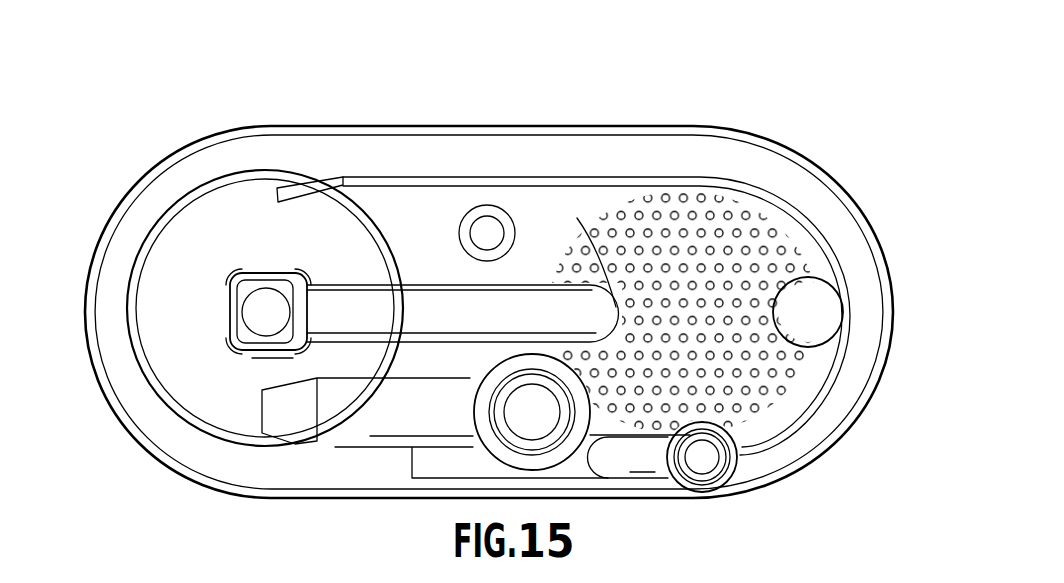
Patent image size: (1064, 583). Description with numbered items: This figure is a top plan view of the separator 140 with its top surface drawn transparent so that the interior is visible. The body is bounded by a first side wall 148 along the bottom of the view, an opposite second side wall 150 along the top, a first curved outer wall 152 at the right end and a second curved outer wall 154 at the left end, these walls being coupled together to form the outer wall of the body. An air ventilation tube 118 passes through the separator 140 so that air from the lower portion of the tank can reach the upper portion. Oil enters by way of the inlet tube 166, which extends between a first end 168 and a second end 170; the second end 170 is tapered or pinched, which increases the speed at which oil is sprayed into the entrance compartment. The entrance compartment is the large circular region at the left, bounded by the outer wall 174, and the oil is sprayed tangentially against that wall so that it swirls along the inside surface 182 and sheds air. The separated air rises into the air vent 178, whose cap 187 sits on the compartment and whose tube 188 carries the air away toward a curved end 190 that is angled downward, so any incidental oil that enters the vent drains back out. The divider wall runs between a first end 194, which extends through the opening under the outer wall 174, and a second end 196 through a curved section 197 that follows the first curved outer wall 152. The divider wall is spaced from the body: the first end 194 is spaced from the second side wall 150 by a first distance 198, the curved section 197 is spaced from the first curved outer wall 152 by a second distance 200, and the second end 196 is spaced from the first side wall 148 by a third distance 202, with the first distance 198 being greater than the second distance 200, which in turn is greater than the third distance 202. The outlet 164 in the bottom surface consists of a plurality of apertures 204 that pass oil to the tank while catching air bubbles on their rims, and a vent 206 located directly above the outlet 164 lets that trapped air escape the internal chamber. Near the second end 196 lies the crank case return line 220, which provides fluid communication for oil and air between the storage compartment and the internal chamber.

The separator 140 is at (884, 102).
The first side wall 148 is at (319, 501).
The second side wall 150 is at (680, 126).
The first curved outer wall 152 is at (893, 301).
The second curved outer wall 154 is at (84, 278).
The outlet 164 is at (702, 268).
The tube 166 is at (390, 420).
The first end 168 is at (552, 458).
The second end 170 is at (278, 415).
The outer wall 174 is at (145, 235).
The air vent 178 is at (492, 308).
The inside surface 182 is at (138, 301).
The cap 187 is at (247, 284).
The tube 188 is at (327, 307).
The curved end 190 is at (584, 249).
The first end 194 is at (391, 182).
The second end 196 is at (747, 454).
The curved section 197 is at (842, 278).
The first distance 198 is at (372, 177).
The second distance 200 is at (853, 325).
The third distance 202 is at (743, 459).
The apertures 204 is at (652, 195).
The vent 206 is at (809, 277).
The crank case return line 220 is at (690, 485).
The air ventilation tube 118 is at (490, 207).